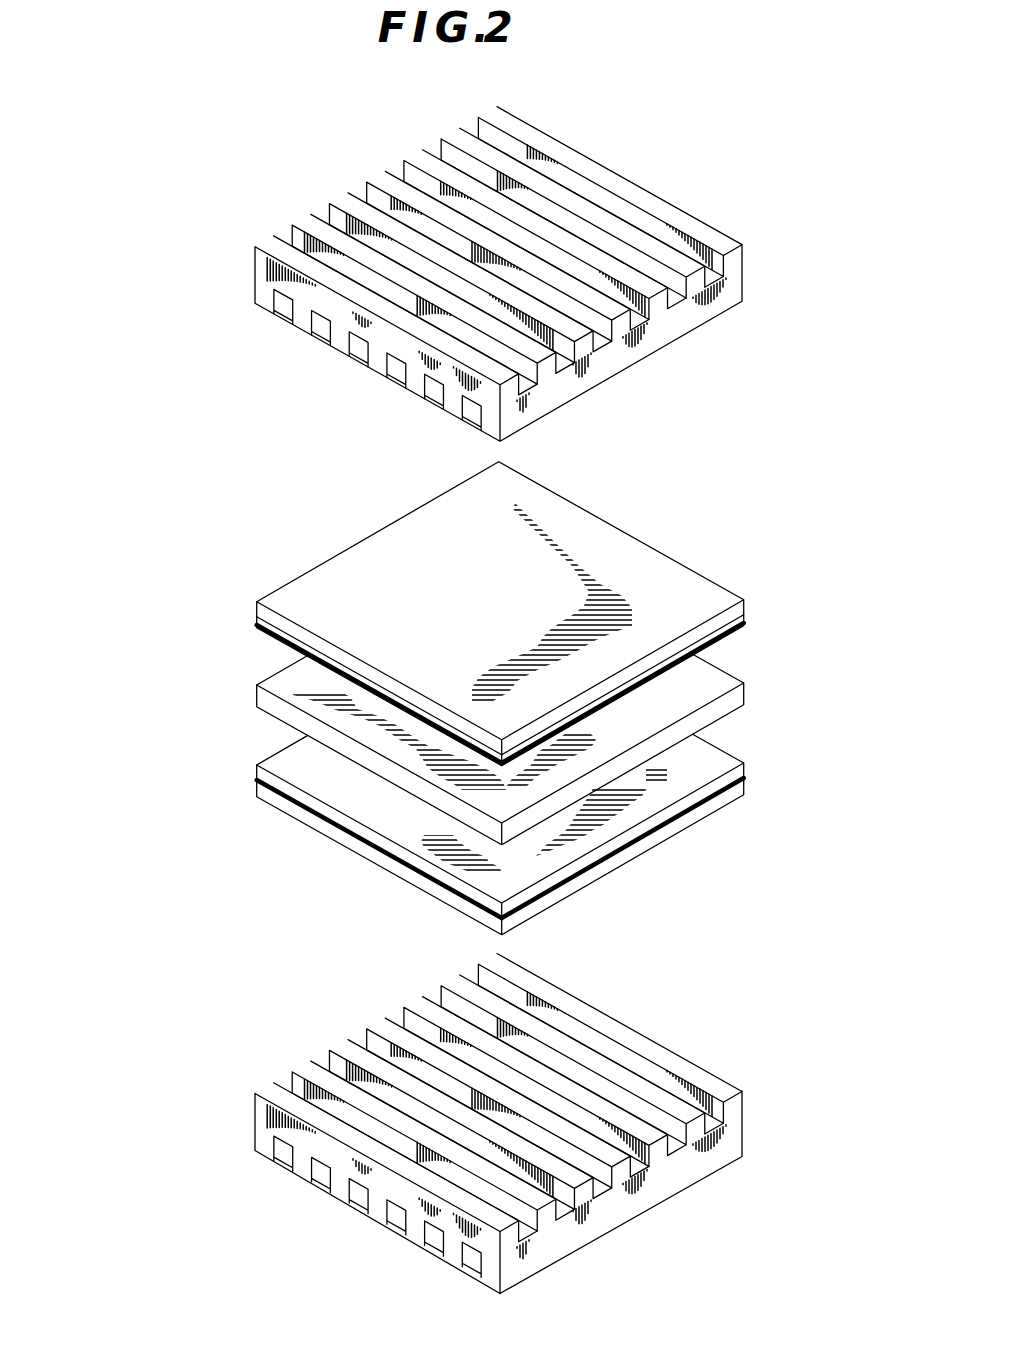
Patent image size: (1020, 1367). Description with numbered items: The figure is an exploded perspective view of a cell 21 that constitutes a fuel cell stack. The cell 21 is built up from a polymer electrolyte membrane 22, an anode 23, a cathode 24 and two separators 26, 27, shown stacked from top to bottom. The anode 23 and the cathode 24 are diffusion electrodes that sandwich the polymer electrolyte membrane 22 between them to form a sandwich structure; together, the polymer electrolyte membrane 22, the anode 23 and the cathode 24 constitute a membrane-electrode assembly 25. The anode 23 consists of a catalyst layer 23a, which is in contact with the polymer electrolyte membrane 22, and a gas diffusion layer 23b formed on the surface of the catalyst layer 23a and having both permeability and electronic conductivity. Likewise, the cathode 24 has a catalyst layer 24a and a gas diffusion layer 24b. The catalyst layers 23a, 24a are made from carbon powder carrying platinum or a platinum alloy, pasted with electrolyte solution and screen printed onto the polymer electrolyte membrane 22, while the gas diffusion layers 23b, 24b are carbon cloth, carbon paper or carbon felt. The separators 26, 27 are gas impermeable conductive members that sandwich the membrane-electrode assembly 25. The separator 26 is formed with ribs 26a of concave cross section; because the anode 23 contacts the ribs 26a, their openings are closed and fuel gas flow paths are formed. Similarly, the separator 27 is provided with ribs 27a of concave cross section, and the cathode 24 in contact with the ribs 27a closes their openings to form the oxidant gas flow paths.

The cell 21 is at (107, 196).
The polymer electrolyte membrane 22 is at (257, 698).
The anode 23 is at (167, 578).
The catalyst layer 23a is at (257, 623).
The gas diffusion layer 23b is at (257, 610).
The cathode 24 is at (167, 748).
The catalyst layer 24a is at (257, 770).
The gas diffusion layer 24b is at (257, 790).
The membrane-electrode assembly 25 is at (122, 595).
The separator 26 is at (254, 272).
The ribs 26a is at (321, 337).
The separator 27 is at (742, 1142).
The ribs 27a is at (697, 1128).